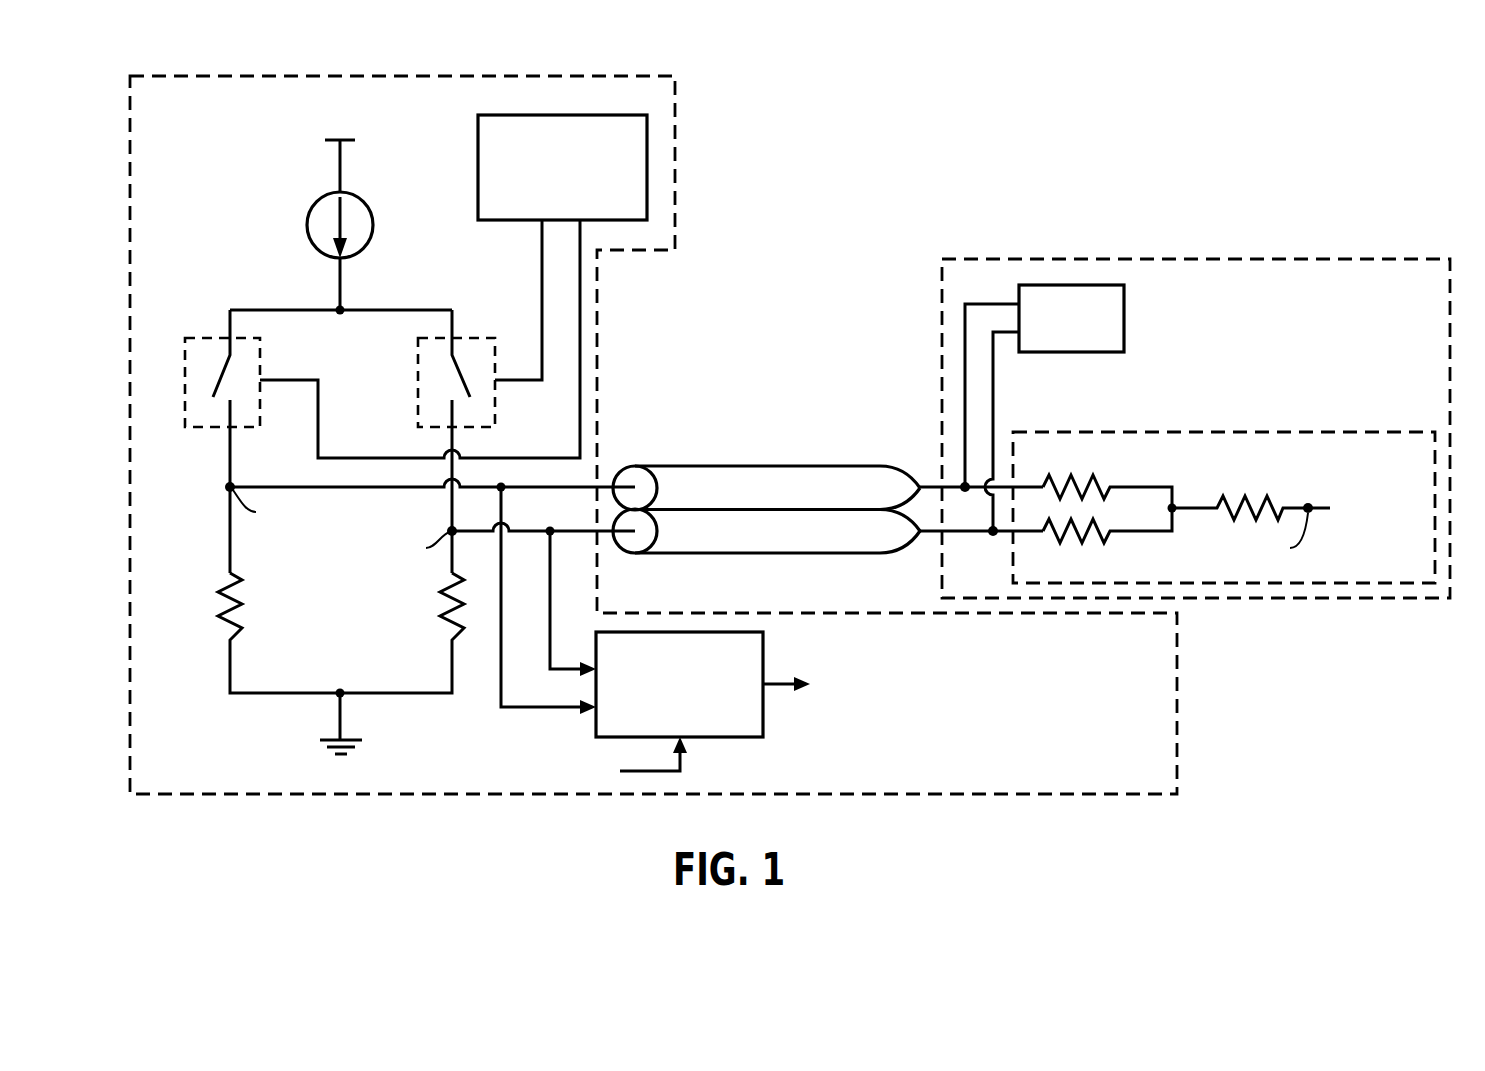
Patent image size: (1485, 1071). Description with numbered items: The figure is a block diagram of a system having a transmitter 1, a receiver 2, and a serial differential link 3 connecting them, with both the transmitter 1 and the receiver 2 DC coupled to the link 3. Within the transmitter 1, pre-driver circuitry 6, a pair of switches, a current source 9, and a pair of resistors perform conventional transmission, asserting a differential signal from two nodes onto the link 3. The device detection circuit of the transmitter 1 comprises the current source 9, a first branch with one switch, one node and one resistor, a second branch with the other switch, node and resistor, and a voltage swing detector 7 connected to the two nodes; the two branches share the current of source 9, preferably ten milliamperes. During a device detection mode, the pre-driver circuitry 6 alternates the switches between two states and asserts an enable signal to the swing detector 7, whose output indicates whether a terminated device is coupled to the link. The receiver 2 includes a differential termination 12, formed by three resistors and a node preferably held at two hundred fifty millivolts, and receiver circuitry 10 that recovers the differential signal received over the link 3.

The transmitter 1 is at (675, 133).
The receiver 2 is at (1148, 259).
The serial differential link 3 is at (744, 464).
The transmitter pre-driver circuitry 6 is at (478, 144).
The voltage swing detector 7 is at (763, 722).
The current source 9 is at (311, 208).
The receiver circuitry 10 is at (1124, 307).
The differential termination 12 is at (1283, 432).